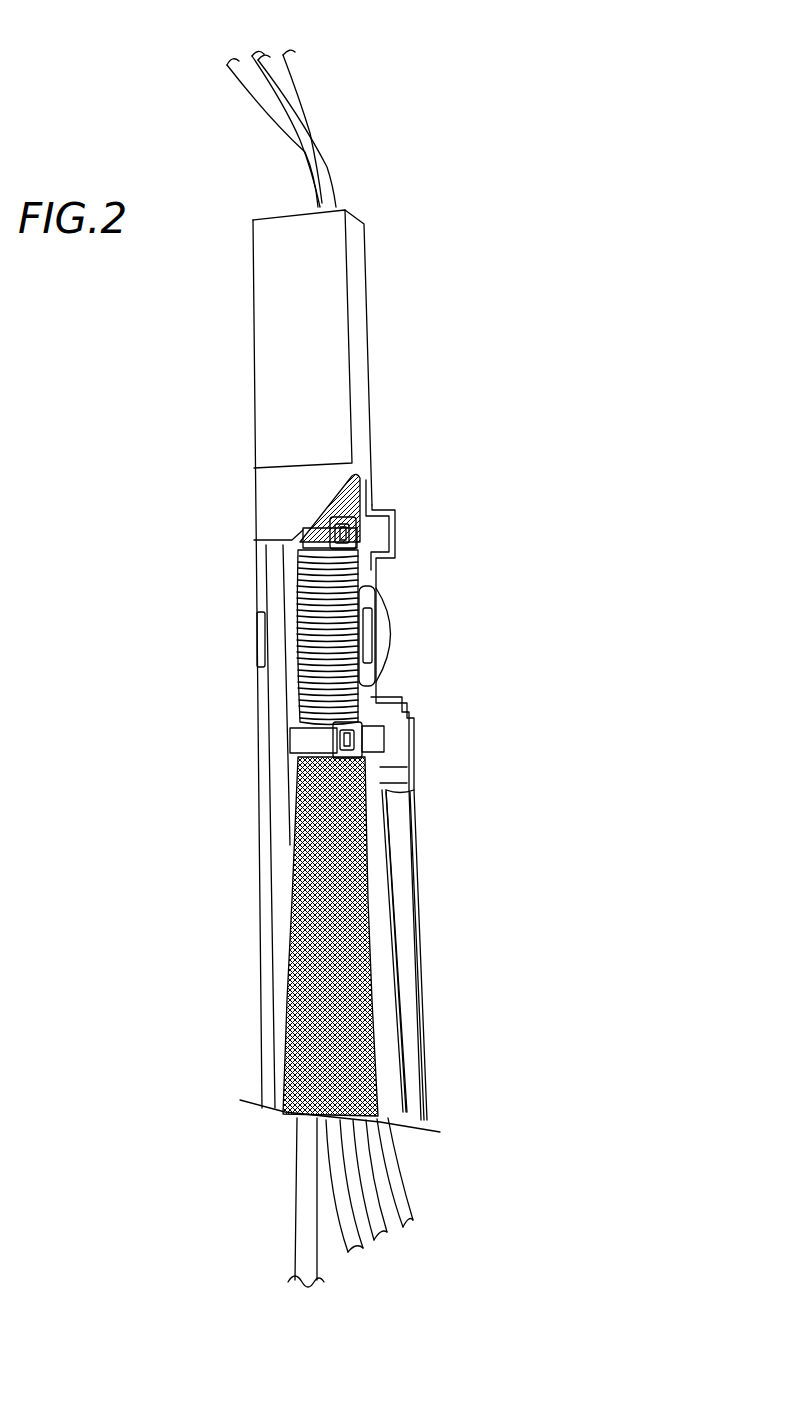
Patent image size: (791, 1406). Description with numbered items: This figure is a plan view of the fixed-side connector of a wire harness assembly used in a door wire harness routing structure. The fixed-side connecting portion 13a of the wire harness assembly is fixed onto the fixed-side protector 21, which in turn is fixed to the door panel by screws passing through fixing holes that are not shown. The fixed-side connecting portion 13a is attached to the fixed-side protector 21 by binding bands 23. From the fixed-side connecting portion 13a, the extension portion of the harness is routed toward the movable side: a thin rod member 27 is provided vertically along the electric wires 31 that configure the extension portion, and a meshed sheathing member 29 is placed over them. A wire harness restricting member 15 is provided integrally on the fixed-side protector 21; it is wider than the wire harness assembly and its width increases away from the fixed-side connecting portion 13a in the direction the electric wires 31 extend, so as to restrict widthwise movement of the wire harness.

The fixed-side connecting portion 13a is at (404, 345).
The wire harness restricting member 15 is at (413, 1074).
The fixed-side protector 21 is at (400, 863).
The binding bands 23 is at (307, 540).
The thin rod member 27 is at (297, 1200).
The meshed sheathing member 29 is at (343, 982).
The electric wires 31 is at (336, 153).